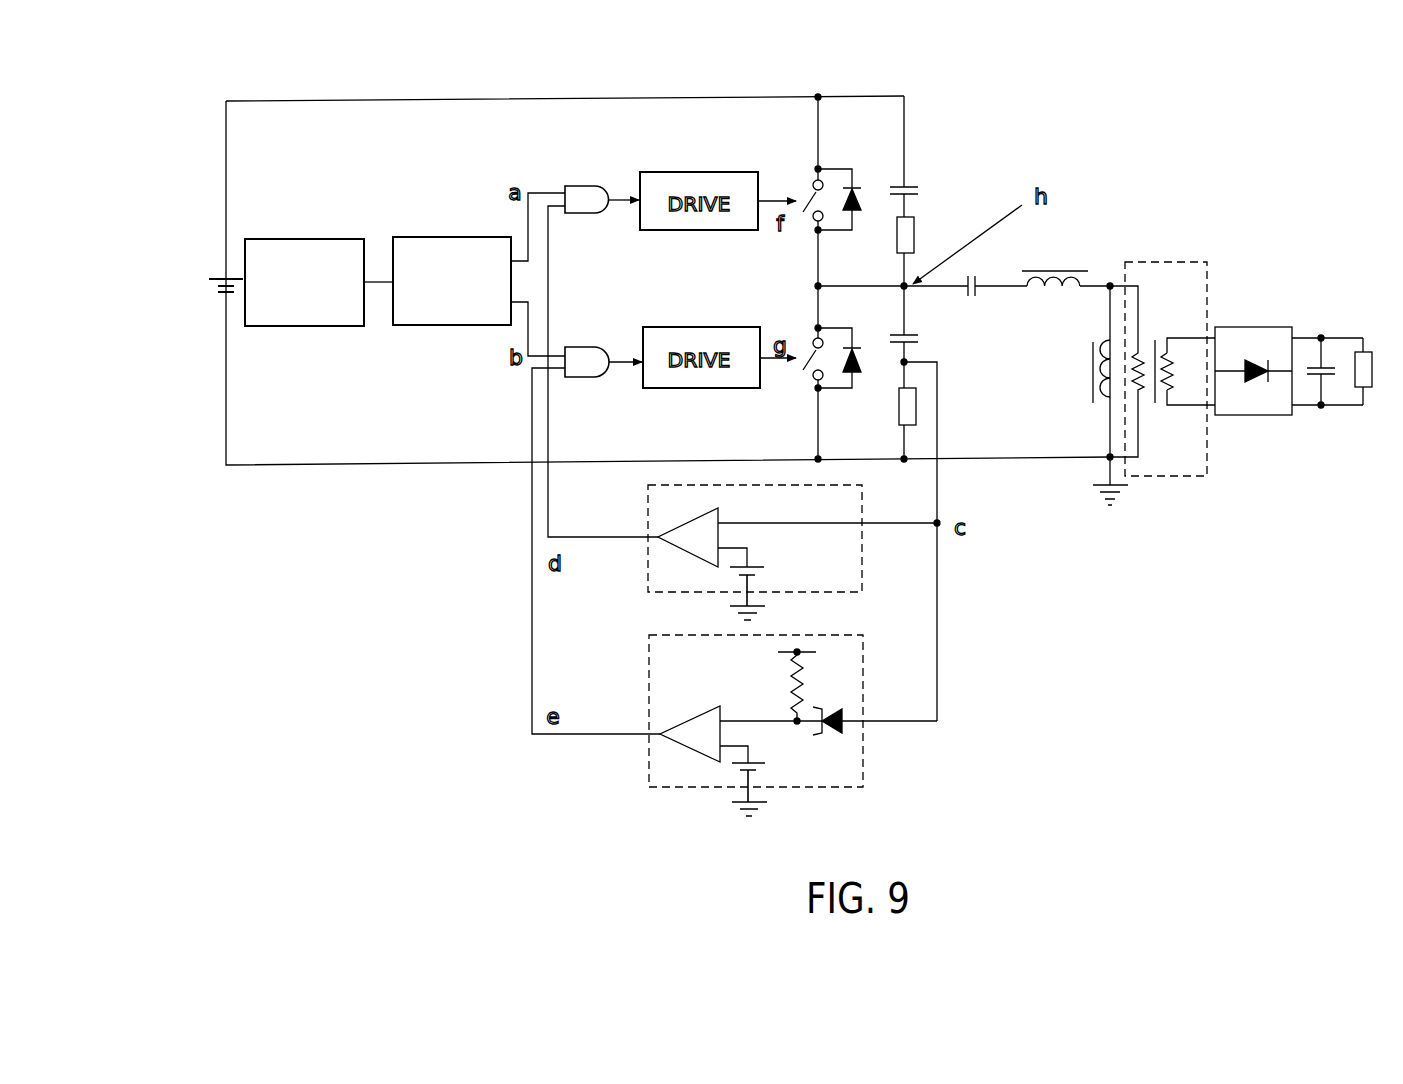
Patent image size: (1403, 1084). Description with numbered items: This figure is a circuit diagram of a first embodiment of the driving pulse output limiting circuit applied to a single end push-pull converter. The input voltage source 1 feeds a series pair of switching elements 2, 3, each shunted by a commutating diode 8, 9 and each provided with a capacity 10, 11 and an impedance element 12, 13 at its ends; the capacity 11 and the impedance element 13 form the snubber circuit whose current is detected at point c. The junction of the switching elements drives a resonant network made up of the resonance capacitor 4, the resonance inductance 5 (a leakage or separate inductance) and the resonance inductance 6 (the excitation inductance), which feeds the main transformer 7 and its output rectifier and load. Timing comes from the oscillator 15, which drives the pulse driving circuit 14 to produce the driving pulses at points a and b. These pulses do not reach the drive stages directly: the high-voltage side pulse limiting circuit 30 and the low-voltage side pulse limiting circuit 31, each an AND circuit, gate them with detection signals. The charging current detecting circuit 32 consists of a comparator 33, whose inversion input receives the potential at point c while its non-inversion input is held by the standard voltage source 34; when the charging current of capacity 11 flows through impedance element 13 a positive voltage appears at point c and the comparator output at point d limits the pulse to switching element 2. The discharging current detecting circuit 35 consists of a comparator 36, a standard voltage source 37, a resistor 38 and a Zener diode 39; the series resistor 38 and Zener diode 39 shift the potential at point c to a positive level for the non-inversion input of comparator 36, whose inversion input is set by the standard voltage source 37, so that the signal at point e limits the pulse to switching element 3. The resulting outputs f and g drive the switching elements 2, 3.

The input voltage source 1 is at (212, 278).
The switching element 2 is at (812, 192).
The switching element 3 is at (812, 382).
The resonance capacitor 4 is at (997, 277).
The resonance inductance 5 is at (1052, 268).
The resonance inductance 6 is at (1075, 398).
The main transformer 7 is at (1207, 272).
The commutating diode 8 is at (862, 208).
The commutating diode 9 is at (857, 378).
The capacity 10 is at (912, 190).
The capacity 11 is at (918, 333).
The impedance element 12 is at (916, 232).
The impedance element 13 is at (902, 428).
The pulse driving circuit 14 is at (480, 236).
The oscillator 15 is at (350, 238).
The high-voltage side pulse limiting circuit 30 is at (592, 186).
The low-voltage side pulse limiting circuit 31 is at (598, 347).
The charging current detecting circuit 32 is at (760, 552).
The comparator 33 is at (718, 507).
The standard voltage source 34 is at (762, 568).
The discharging current detecting circuit 35 is at (763, 725).
The comparator 36 is at (693, 712).
The standard voltage source 37 is at (762, 759).
The resistor 38 is at (791, 692).
The Zener diode 39 is at (833, 710).